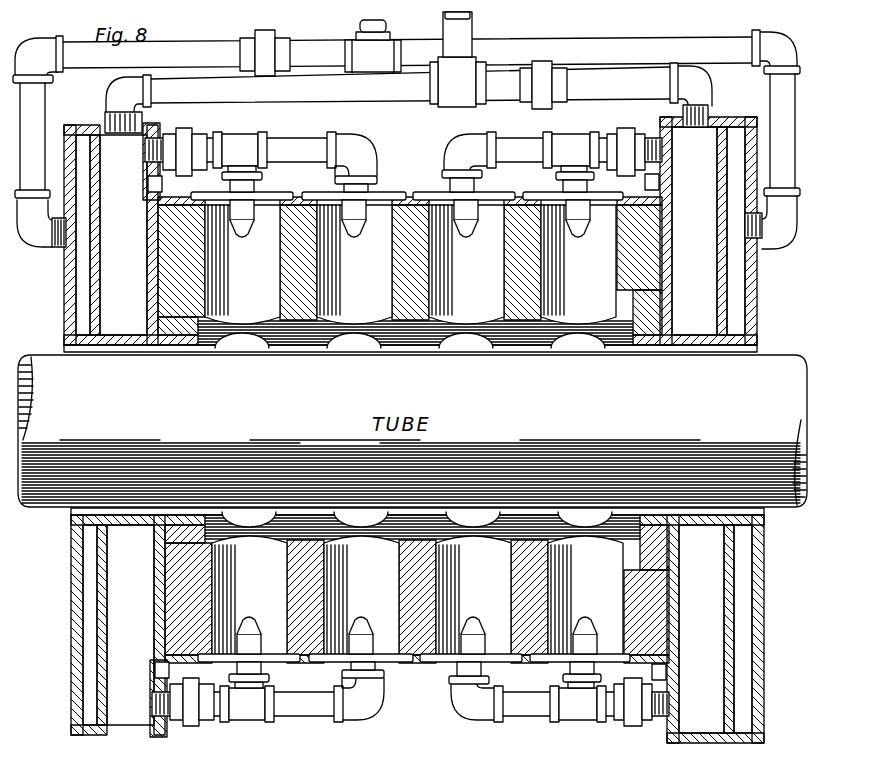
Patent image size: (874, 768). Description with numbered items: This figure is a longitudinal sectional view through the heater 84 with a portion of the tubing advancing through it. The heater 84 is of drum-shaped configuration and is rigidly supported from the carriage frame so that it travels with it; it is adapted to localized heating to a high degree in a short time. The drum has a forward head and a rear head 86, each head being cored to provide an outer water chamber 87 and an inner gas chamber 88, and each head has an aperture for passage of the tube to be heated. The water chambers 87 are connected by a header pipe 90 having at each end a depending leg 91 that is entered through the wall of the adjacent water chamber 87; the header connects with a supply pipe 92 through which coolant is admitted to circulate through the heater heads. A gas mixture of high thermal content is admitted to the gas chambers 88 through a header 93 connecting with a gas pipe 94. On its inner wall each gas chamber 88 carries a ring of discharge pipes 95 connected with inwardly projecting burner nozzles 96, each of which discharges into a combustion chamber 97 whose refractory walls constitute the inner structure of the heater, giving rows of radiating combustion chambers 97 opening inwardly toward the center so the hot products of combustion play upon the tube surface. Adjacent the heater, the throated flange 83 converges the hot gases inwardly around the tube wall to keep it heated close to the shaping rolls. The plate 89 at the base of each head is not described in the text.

The throated flange 83 is at (730, 287).
The heater 84 is at (116, 249).
The rear head 86 is at (92, 278).
The outer water chamber 87 is at (86, 302).
The inner gas chamber 88 is at (134, 311).
The base plate 89 is at (67, 352).
The header pipe 90 is at (612, 24).
The depending leg 91 is at (40, 110).
The supply pipe 92 is at (380, 22).
The header 93 is at (364, 93).
The gas pipe 94 is at (462, 26).
The discharge pipes 95 is at (293, 145).
The burner nozzles 96 is at (239, 238).
The combustion chamber 97 is at (257, 290).